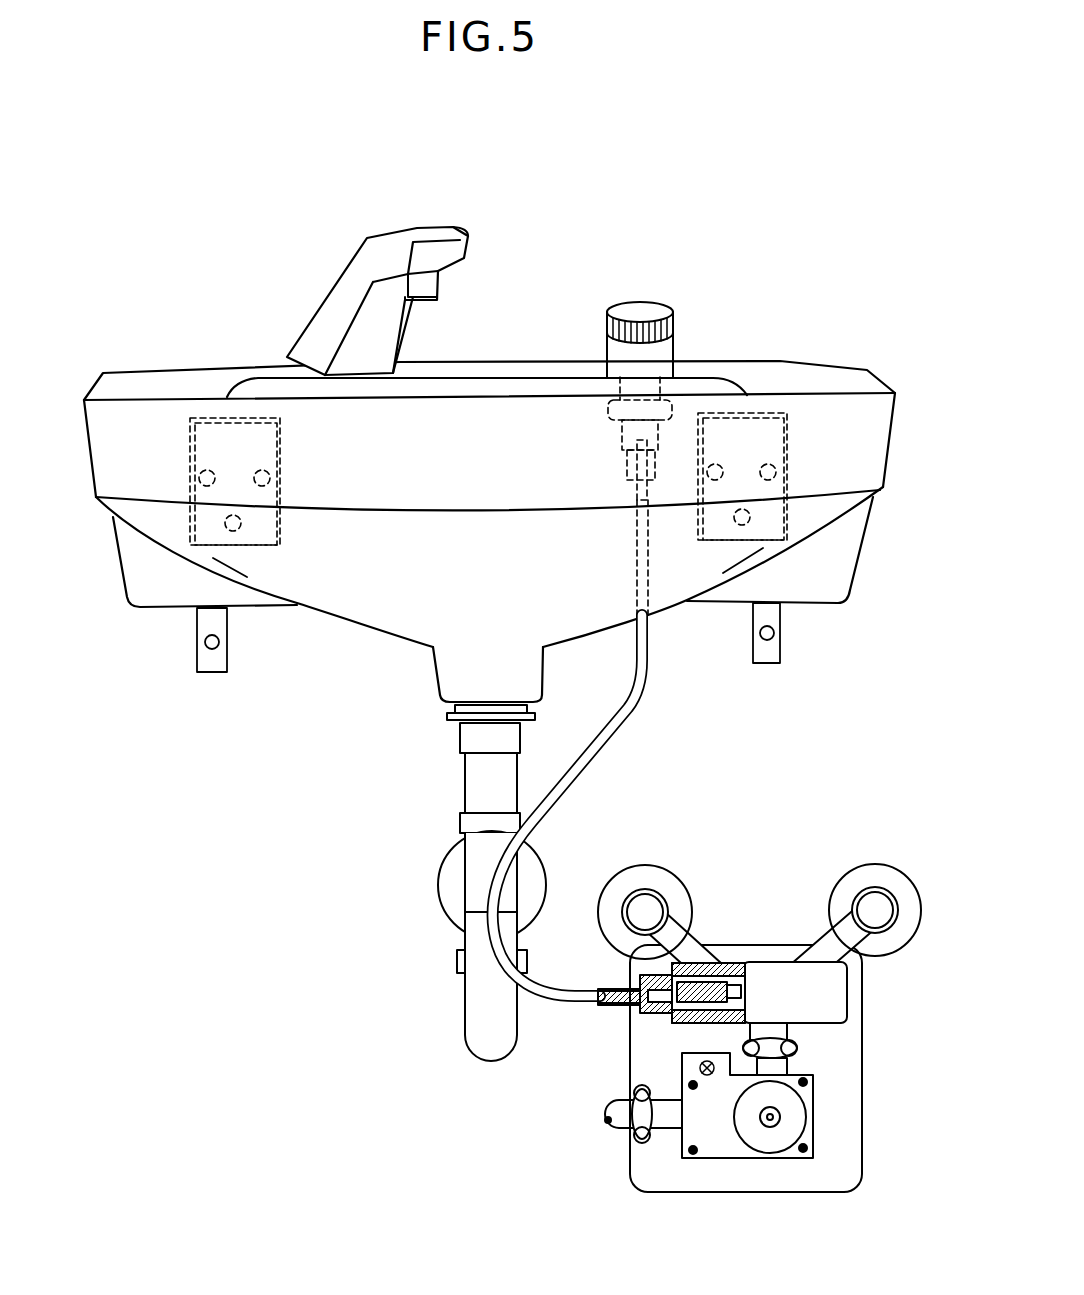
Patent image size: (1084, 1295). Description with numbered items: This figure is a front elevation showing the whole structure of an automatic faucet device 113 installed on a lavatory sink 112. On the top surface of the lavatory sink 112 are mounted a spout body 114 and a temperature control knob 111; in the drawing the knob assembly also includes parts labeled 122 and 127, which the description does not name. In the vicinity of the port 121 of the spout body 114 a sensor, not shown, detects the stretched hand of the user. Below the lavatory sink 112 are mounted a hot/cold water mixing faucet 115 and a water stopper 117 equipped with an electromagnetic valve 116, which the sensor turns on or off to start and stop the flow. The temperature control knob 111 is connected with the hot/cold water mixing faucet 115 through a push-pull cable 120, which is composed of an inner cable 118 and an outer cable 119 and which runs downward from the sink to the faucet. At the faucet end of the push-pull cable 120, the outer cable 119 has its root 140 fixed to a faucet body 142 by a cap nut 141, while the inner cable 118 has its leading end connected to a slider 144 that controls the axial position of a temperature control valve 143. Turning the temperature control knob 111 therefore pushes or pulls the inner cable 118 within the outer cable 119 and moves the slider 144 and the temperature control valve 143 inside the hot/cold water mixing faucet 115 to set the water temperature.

The temperature control knob 111 is at (690, 307).
The lavatory sink 112 is at (360, 614).
The automatic faucet device 113 is at (733, 927).
The spout body 114 is at (390, 291).
The hot/cold water mixing faucet 115 is at (795, 972).
The electromagnetic valve 116 is at (793, 1120).
The water stopper 117 is at (693, 1128).
The inner cable 118 is at (613, 1005).
The outer cable 119 is at (615, 992).
The push-pull cable 120 is at (626, 712).
The port 121 is at (435, 293).
The valve stem 122 is at (607, 340).
The handle knob 127 is at (643, 307).
The root 140 is at (610, 985).
The cap nut 141 is at (645, 1020).
The faucet body 142 is at (703, 964).
The temperature control valve 143 is at (732, 963).
The slider 144 is at (657, 1016).